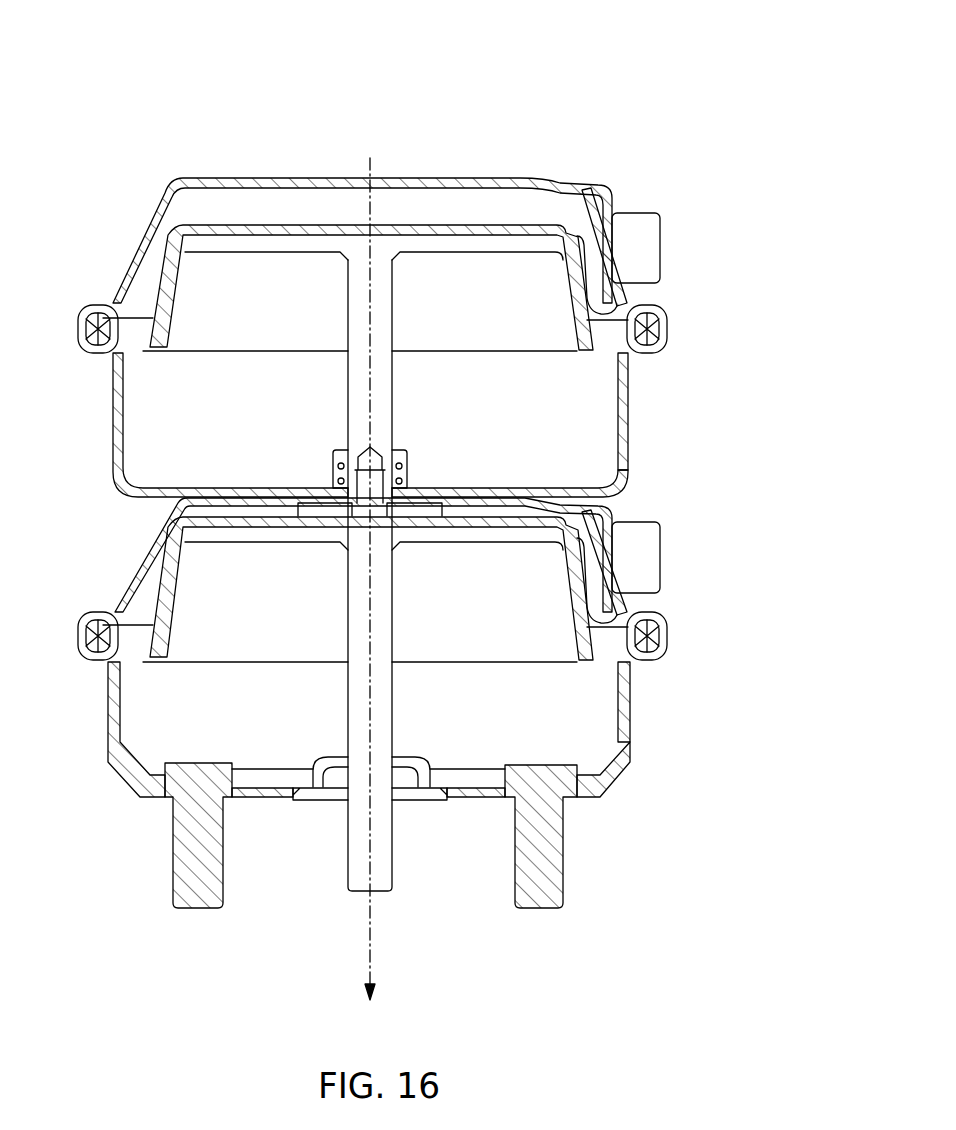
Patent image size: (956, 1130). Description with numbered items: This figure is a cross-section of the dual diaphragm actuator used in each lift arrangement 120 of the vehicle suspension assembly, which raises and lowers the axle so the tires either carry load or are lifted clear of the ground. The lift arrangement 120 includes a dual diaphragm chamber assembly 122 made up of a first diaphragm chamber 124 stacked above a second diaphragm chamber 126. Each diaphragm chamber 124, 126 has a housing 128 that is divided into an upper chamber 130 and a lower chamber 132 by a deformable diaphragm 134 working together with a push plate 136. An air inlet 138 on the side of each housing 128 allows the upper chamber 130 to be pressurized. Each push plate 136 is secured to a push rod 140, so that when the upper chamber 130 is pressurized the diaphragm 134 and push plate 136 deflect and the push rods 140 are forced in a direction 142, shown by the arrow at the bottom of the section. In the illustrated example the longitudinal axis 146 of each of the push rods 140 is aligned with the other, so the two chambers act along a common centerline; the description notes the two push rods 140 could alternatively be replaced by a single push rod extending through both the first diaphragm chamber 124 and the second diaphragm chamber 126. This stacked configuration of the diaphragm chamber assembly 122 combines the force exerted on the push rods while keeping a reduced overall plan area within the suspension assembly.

The lift arrangement 120 is at (465, 75).
The dual diaphragm chamber assembly 122 is at (686, 421).
The first diaphragm chamber 124 is at (664, 311).
The second diaphragm chamber 126 is at (668, 626).
The housing 128 is at (628, 377).
The upper chamber 130 is at (195, 212).
The lower chamber 132 is at (597, 442).
The deformable diaphragm 134 is at (580, 277).
The push plate 136 is at (492, 245).
The air inlet 138 is at (635, 223).
The push rod 140 is at (382, 386).
The direction 142 is at (385, 954).
The longitudinal axis 146 is at (380, 292).